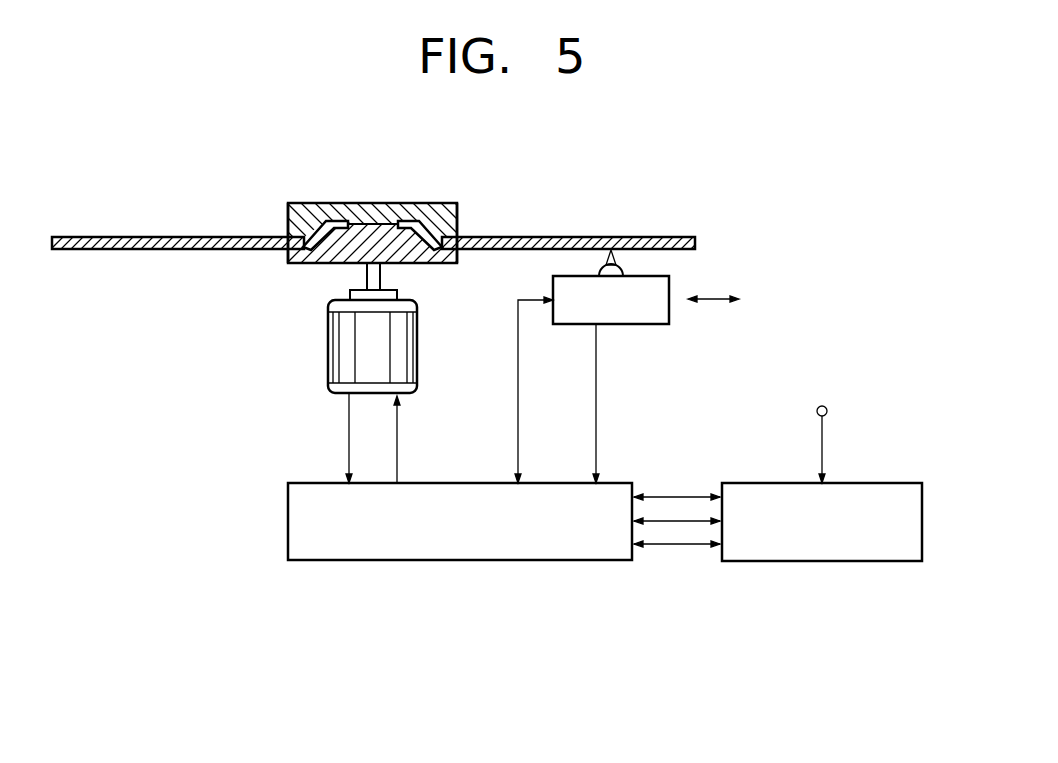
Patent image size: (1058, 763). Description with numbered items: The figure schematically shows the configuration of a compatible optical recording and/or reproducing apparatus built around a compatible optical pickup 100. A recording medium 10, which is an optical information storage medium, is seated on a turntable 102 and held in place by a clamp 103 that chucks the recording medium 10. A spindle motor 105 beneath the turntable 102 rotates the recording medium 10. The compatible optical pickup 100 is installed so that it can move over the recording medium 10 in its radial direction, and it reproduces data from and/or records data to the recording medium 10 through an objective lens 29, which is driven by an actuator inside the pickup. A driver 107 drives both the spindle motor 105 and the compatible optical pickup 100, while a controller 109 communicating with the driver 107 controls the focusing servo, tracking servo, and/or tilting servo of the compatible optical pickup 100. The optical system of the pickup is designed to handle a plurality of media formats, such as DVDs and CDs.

The recording medium 10 is at (645, 237).
The objective lens 29 is at (598, 268).
The compatible optical pickup 100 is at (627, 322).
The turntable 102 is at (300, 263).
The clamp 103 is at (313, 212).
The spindle motor 105 is at (328, 347).
The driver 107 is at (461, 563).
The controller 109 is at (826, 563).